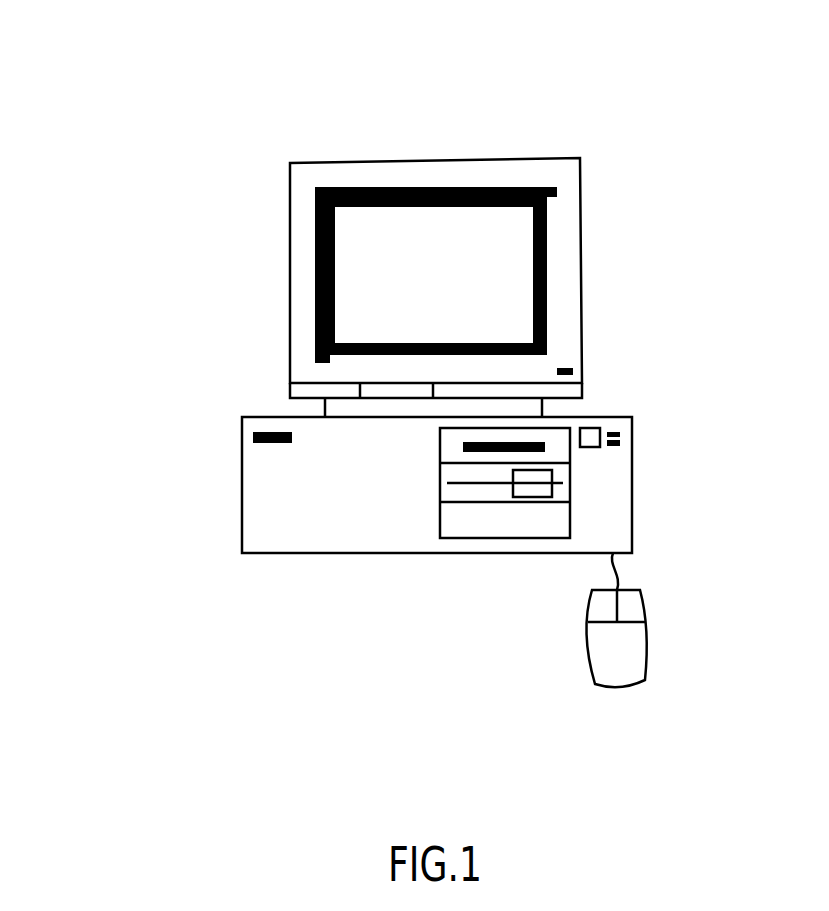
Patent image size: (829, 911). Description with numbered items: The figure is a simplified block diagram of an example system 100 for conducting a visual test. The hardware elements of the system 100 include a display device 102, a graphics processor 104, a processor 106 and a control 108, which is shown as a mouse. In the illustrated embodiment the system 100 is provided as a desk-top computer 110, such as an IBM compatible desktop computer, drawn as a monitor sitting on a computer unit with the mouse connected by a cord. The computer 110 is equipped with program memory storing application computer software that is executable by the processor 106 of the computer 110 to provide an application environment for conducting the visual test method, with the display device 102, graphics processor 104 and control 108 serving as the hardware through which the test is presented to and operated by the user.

The system 100 is at (152, 92).
The display device 102 is at (580, 167).
The graphics processor 104 is at (188, 506).
The processor 106 is at (188, 591).
The control 108 is at (645, 668).
The desk-top computer 110 is at (192, 285).